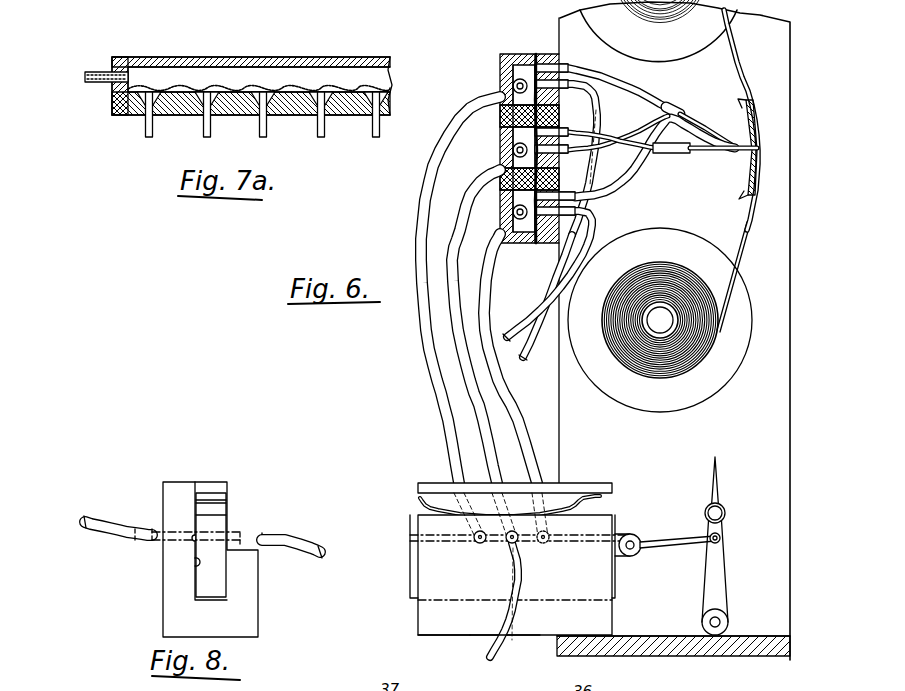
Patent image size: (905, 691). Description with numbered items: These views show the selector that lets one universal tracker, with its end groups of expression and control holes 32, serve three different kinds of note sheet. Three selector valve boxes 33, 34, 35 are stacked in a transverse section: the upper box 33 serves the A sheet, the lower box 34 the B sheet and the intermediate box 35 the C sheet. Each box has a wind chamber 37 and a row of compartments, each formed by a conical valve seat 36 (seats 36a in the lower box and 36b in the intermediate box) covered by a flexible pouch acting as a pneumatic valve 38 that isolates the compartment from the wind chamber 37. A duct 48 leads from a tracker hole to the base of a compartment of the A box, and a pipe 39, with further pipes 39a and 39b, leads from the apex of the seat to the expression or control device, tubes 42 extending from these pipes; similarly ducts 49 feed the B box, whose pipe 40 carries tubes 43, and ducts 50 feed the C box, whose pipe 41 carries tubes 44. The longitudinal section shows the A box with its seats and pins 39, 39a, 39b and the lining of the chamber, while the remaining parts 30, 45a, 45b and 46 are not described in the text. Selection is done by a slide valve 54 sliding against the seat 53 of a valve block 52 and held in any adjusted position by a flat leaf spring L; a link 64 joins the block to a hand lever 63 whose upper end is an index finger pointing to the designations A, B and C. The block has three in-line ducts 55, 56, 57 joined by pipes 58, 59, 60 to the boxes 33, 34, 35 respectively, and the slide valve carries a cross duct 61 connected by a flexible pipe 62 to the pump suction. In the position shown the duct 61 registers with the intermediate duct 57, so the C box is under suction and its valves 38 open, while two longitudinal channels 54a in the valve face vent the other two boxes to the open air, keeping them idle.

In FIG. 6, the thread guide 30 is at (738, 103).
In FIG. 6, the expression and control holes 32 is at (759, 148).
In FIG. 7A, the selector valve box 33 is at (193, 56).
In FIG. 6, the selector valve box 33 is at (500, 54).
In FIG. 6, the selector valve box 34 is at (500, 190).
In FIG. 6, the selector valve box 35 is at (500, 130).
In FIG. 7A, the conical valve seat 36 is at (115, 116).
In FIG. 6, the conical valve seat 36 is at (539, 66).
In FIG. 6, the valve seats 36a is at (500, 227).
In FIG. 6, the valve seats 36b is at (500, 123).
In FIG. 7A, the wind chamber 37 is at (256, 72).
In FIG. 6, the wind chamber 37 is at (516, 71).
In FIG. 7A, the pneumatic valve 38 is at (307, 90).
In FIG. 6, the pneumatic valve 38 is at (500, 138).
In FIG. 7A, the pipe 39 is at (150, 128).
In FIG. 6, the pipe 39 is at (581, 159).
In FIG. 7A, the pipe 39a is at (207, 126).
In FIG. 7A, the pipe 39b is at (263, 127).
In FIG. 6, the pipe 40 is at (630, 186).
In FIG. 6, the pipe 41 is at (670, 156).
In FIG. 6, the tube or duct 42 is at (600, 124).
In FIG. 6, the tube or duct 43 is at (528, 300).
In FIG. 6, the tube or duct 44 is at (598, 219).
In FIG. 6, the base portion 45a is at (497, 690).
In FIG. 6, the base portion 45b is at (428, 690).
In FIG. 6, the nipple 46 is at (568, 191).
In FIG. 6, the duct 48 is at (612, 79).
In FIG. 6, the duct 49 is at (662, 156).
In FIG. 6, the duct 50 is at (627, 140).
In FIG. 8, the valve block 52 is at (176, 593).
In FIG. 8, the seat 53 is at (196, 563).
In FIG. 8, the slide valve 54 is at (247, 545).
In FIG. 6, the longitudinal channels 54a is at (602, 533).
In FIG. 8, the longitudinal channels 54a is at (200, 537).
In FIG. 6, the duct 55 is at (478, 544).
In FIG. 6, the duct 56 is at (550, 545).
In FIG. 6, the duct 57 is at (508, 549).
In FIG. 6, the pipe 58 is at (440, 416).
In FIG. 8, the pipe 58 is at (113, 518).
In FIG. 6, the pipe 59 is at (523, 422).
In FIG. 6, the pipe 60 is at (493, 455).
In FIG. 8, the valve duct 61 is at (230, 521).
In FIG. 6, the flexible pipe 62 is at (508, 609).
In FIG. 8, the flexible pipe 62 is at (300, 538).
In FIG. 6, the hand lever 63 is at (718, 570).
In FIG. 6, the link 64 is at (673, 546).
In FIG. 6, the flat leaf spring L is at (423, 503).
In FIG. 6, the note sheet designation A is at (660, 483).
In FIG. 6, the note sheet designation B is at (768, 483).
In FIG. 6, the note sheet designation C is at (712, 448).